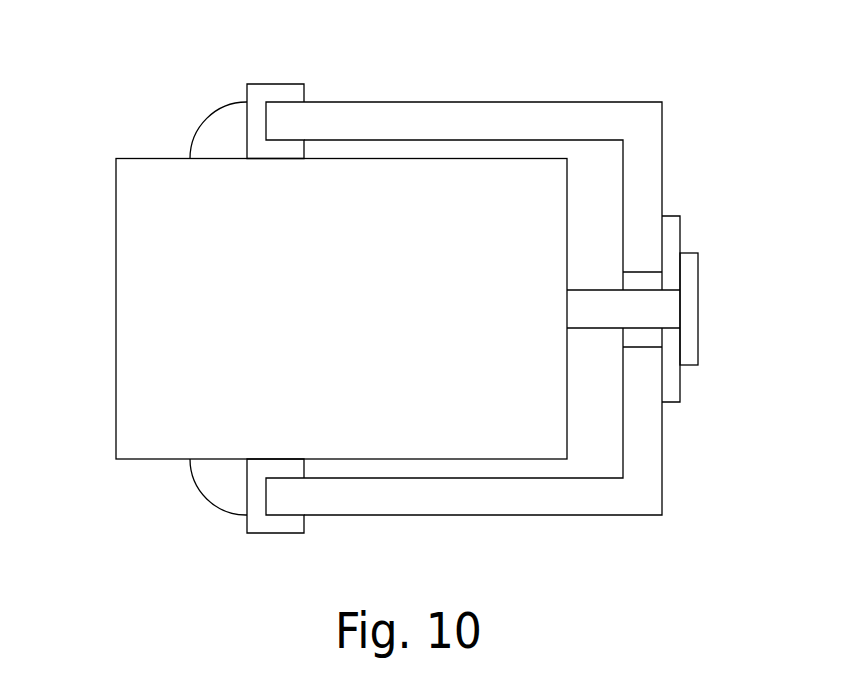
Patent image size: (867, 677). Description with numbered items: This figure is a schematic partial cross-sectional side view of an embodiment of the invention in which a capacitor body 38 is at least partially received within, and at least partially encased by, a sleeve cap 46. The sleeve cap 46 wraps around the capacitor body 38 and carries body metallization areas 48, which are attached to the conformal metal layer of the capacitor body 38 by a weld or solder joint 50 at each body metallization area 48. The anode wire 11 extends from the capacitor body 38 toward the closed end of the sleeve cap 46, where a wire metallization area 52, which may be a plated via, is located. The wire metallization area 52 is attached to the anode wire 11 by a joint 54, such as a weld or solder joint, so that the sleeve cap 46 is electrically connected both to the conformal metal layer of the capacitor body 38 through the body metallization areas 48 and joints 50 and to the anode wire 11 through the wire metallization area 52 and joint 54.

The anode wire 11 is at (625, 308).
The capacitor body 38 is at (155, 312).
The sleeve cap 46 is at (624, 125).
The body metallization areas 48 is at (262, 98).
The weld or solder joint 50 is at (223, 140).
The wire metallization area 52 is at (672, 242).
The joint 54 is at (690, 313).